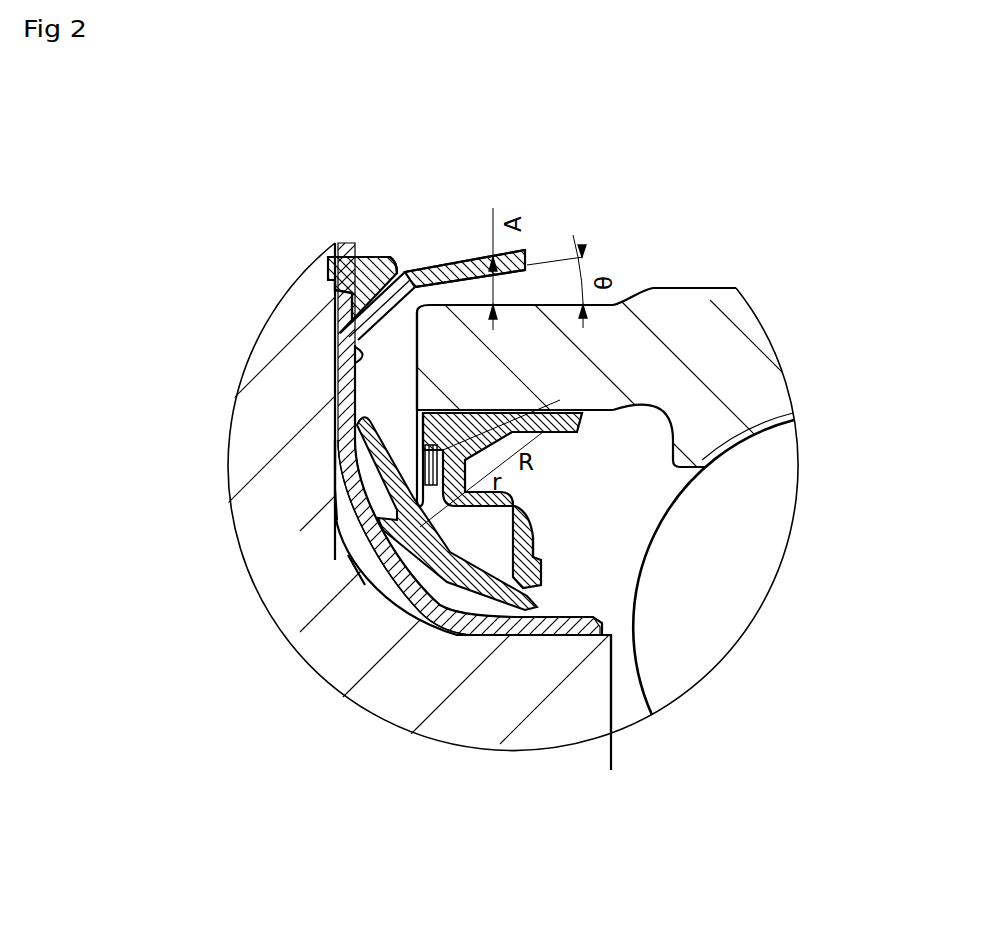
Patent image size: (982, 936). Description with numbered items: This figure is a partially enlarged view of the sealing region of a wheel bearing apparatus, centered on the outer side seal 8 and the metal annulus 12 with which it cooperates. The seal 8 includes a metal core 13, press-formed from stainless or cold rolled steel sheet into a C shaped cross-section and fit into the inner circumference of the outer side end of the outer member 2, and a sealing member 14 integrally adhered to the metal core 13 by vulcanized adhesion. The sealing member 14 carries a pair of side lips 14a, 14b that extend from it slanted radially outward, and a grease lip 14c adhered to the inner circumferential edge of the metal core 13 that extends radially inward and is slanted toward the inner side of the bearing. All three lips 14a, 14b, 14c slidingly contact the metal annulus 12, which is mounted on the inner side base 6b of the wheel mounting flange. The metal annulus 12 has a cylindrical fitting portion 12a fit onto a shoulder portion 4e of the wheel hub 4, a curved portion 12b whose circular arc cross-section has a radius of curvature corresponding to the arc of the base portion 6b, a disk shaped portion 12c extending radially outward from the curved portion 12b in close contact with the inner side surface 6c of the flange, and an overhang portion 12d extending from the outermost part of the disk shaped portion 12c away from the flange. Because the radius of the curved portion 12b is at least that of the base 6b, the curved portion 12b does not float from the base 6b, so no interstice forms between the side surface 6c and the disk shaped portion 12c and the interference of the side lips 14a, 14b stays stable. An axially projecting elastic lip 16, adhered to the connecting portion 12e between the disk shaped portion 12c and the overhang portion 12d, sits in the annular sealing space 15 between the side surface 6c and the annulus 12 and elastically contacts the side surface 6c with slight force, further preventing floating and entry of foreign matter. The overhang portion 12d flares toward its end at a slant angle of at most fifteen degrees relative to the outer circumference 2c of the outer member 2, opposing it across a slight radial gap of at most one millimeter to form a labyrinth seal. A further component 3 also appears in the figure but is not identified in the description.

The outer member 2 is at (768, 388).
The outer circumference of the outer member 2c is at (474, 290).
The rolling element (ball) 3 is at (726, 600).
The wheel hub 4 is at (288, 605).
The shoulder portion of the wheel hub 4e is at (598, 614).
The inner side base of the wheel mounting flange 6b is at (405, 600).
The inner side surface of the wheel mounting flange 6c is at (358, 352).
The outer side seal 8 is at (541, 537).
The metal annulus 12 is at (476, 250).
The cylindrical fitting portion 12a is at (553, 636).
The curved portion 12b is at (452, 605).
The disk shaped portion 12c is at (340, 398).
The overhang portion 12d is at (446, 270).
The connecting portion 12e is at (378, 256).
The metal core 13 is at (505, 488).
The sealing member 14 is at (163, 445).
The side lip 14a is at (337, 462).
The side lip 14b is at (340, 508).
The grease lip 14c is at (358, 580).
The annular sealing space 15 is at (345, 312).
The elastic lip 16 is at (345, 287).